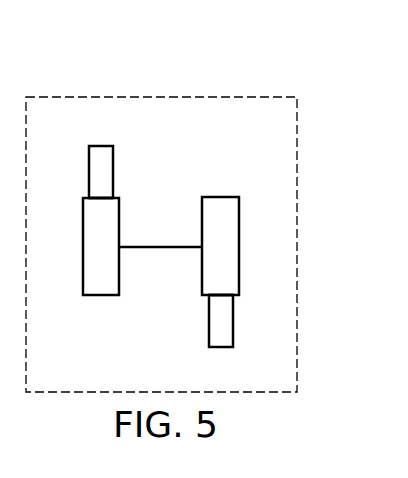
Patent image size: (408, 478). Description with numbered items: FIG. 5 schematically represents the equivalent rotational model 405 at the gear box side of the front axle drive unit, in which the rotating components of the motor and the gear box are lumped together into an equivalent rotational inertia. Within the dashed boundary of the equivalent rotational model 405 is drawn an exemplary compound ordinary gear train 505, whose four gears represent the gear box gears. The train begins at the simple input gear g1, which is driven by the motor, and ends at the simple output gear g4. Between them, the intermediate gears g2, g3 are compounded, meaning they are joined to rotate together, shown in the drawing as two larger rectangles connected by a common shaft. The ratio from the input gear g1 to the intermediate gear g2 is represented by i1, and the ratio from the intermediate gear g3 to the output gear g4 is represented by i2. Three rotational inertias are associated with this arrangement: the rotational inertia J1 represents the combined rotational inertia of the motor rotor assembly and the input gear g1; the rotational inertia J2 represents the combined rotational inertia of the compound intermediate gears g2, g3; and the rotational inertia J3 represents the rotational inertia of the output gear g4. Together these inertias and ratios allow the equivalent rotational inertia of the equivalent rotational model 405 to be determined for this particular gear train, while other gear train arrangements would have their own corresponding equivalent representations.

The equivalent rotational model 405 is at (175, 95).
The compound ordinary gear train 505 is at (154, 246).
The simple input gear g1 is at (101, 161).
The intermediate gear g2 is at (101, 257).
The intermediate gear g3 is at (220, 236).
The simple output gear g4 is at (221, 331).
The g1 to g2 ratio i1 is at (111, 187).
The g3 to g4 ratio i2 is at (208, 296).
The rotational inertia J1 is at (56, 173).
The rotational inertia J2 is at (160, 233).
The rotational inertia J3 is at (251, 323).